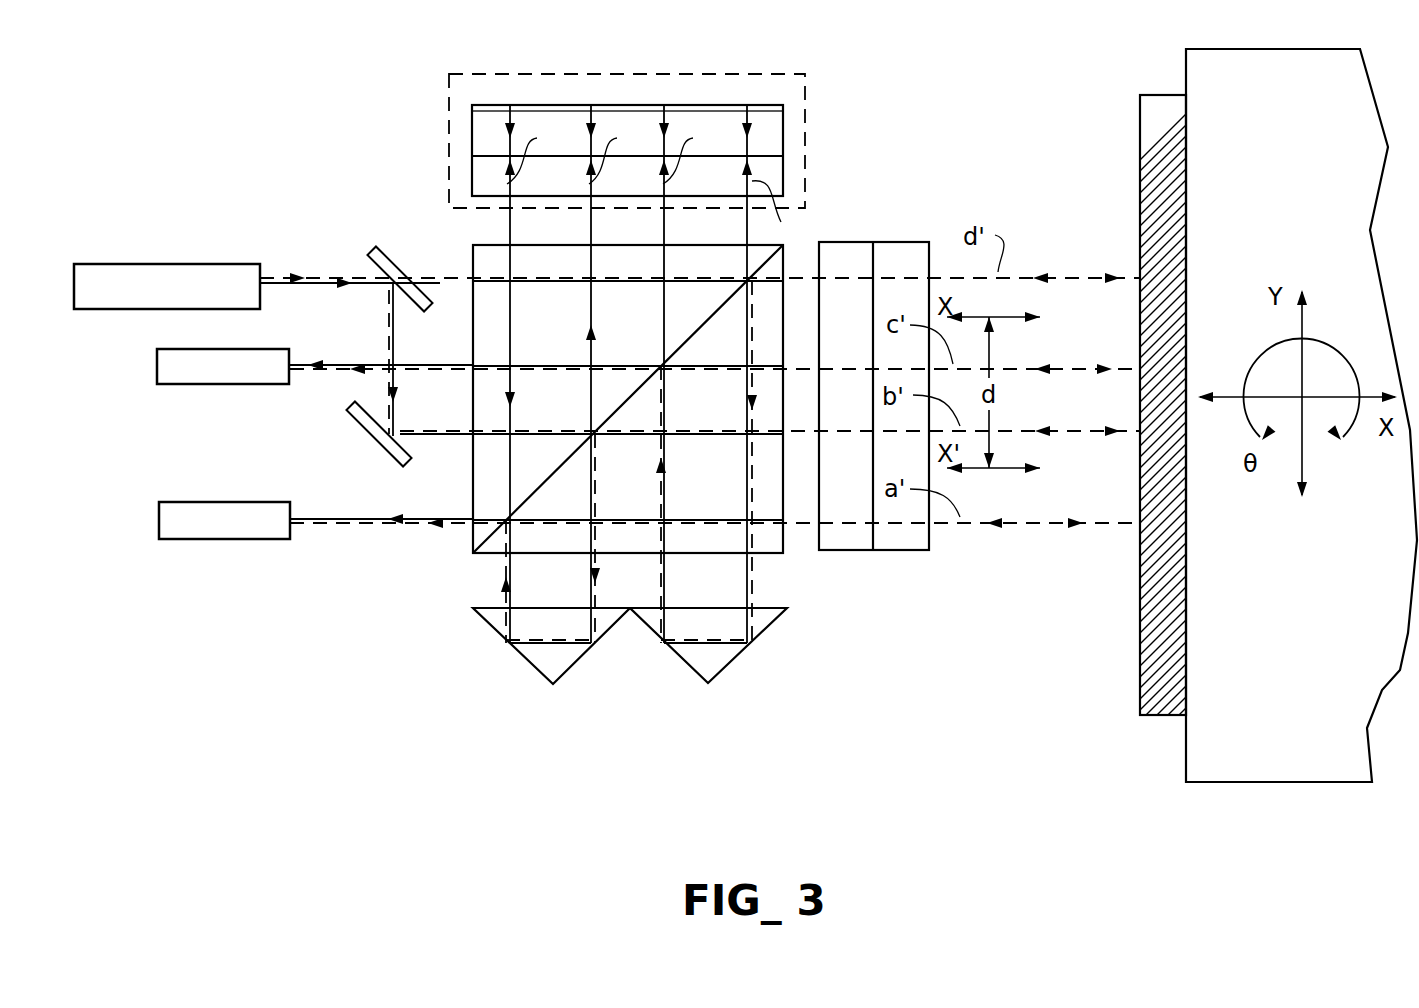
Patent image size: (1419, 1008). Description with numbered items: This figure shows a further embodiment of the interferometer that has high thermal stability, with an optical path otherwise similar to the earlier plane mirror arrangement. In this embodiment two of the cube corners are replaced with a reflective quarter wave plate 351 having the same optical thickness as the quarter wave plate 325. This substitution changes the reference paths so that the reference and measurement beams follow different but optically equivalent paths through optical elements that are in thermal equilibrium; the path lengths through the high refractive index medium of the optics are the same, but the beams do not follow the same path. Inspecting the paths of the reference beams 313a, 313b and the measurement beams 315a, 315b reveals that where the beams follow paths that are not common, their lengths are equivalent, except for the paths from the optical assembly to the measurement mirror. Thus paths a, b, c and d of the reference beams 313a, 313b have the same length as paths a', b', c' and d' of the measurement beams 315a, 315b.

The reference beam 313a is at (437, 287).
The reference beam 313b is at (452, 442).
The measurement beam 315a is at (448, 277).
The measurement beam 315b is at (423, 445).
The quarter wave plate 325 is at (900, 551).
The reflective quarter wave plate 351 is at (790, 148).